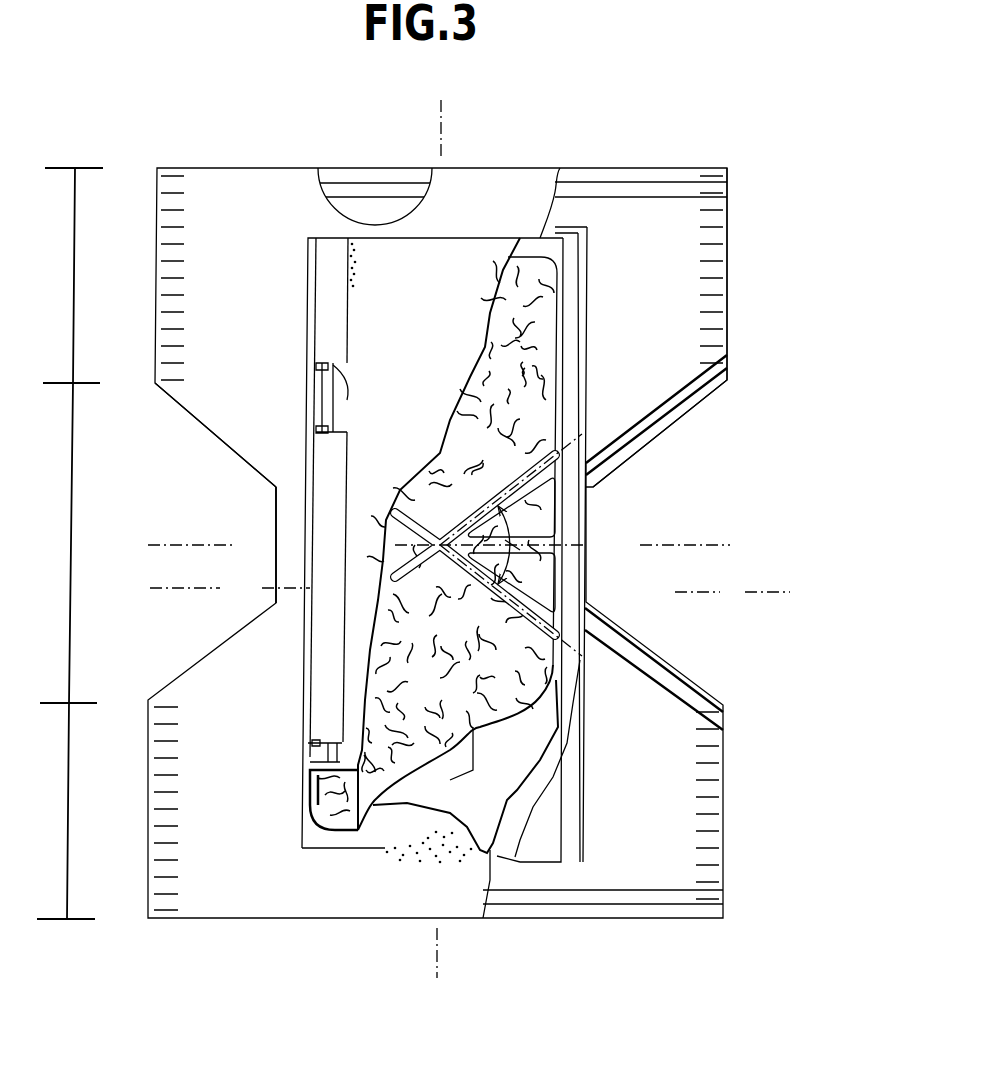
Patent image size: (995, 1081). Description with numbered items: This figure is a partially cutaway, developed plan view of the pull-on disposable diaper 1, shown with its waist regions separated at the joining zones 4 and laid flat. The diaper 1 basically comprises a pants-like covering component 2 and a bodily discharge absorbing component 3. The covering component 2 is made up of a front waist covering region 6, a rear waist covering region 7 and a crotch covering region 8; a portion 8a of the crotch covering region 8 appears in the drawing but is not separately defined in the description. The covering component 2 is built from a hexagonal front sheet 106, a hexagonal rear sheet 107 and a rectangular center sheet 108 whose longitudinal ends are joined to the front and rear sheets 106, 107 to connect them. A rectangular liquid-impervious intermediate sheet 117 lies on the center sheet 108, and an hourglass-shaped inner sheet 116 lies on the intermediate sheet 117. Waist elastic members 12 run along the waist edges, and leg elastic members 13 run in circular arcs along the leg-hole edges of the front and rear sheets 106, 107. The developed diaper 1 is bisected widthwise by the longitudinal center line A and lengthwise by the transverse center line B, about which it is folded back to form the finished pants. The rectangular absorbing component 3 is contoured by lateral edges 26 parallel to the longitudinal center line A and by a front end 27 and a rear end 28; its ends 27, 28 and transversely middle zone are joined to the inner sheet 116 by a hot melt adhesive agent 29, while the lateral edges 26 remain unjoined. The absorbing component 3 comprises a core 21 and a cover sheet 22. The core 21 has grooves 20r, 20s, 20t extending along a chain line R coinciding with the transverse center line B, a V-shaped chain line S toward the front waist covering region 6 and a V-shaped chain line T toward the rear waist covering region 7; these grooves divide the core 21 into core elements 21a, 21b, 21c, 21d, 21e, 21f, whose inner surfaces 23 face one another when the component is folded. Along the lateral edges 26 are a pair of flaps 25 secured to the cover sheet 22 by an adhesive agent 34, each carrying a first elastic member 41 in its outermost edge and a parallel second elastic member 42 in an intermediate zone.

The pull-on disposable diaper 1 is at (627, 64).
The pants-like covering component 2 is at (232, 163).
The bodily discharge absorbing component 3 is at (306, 238).
The joining zones 4 is at (708, 216).
The front waist covering region 6 is at (67, 802).
The rear waist covering region 7 is at (73, 252).
The crotch covering region 8 is at (69, 533).
The side edge of crotch region 8a is at (268, 425).
The waist elastic members 12 is at (392, 195).
The leg elastic members 13 is at (699, 407).
The groove 20r is at (400, 533).
The groove 20s is at (445, 578).
The groove 20t is at (452, 515).
The core 21 is at (559, 366).
The core element 21a is at (473, 693).
The core element 21b is at (540, 407).
The core element 21c is at (518, 592).
The core element 21d is at (398, 615).
The core element 21e is at (533, 500).
The core element 21f is at (398, 512).
The cover sheet 22 is at (490, 246).
The inner surface 23 is at (487, 703).
The flaps 25 is at (350, 310).
The lateral edges 26 is at (355, 354).
The front end 27 is at (358, 845).
The rear end 28 is at (437, 270).
The hot melt adhesive agent 29 is at (422, 843).
The adhesive agent 34 is at (355, 260).
The first elastic member 41 is at (322, 398).
The second elastic member 42 is at (338, 402).
The front sheet 106 is at (683, 855).
The rear sheet 107 is at (328, 178).
The center sheet 108 is at (583, 842).
The inner sheet 116 is at (583, 170).
The intermediate sheet 117 is at (563, 775).
The longitudinal center line A is at (438, 542).
The transverse center line B is at (436, 545).
The chain line T is at (587, 447).
The chain line R is at (573, 543).
The chain line S is at (563, 628).